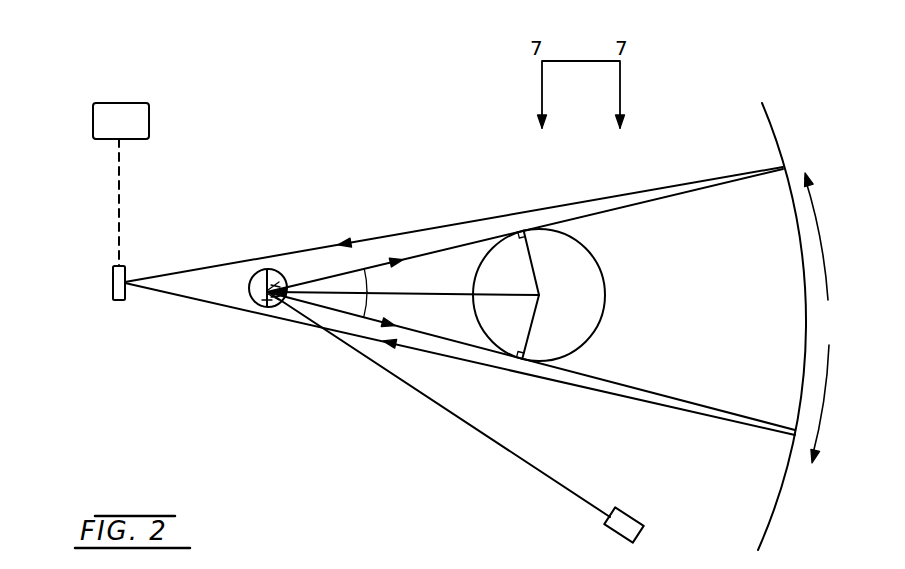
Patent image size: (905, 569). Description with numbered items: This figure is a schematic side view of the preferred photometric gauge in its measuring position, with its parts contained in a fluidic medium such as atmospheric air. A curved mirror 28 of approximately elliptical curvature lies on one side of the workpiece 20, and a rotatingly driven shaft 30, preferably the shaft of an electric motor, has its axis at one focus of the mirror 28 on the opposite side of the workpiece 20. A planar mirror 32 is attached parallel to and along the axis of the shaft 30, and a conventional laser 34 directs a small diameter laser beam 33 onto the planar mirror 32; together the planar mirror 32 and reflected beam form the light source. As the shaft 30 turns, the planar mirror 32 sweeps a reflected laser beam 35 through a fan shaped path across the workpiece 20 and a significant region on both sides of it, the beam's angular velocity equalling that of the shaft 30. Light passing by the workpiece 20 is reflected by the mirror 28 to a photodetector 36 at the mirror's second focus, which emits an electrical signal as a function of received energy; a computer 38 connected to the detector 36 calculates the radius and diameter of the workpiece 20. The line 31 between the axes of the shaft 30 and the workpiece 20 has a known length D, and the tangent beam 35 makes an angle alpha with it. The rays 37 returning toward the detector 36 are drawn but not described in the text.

The workpiece 20 is at (588, 345).
The curved mirror 28 is at (784, 477).
The rotatingly driven shaft 30 is at (262, 269).
The line 31 is at (456, 292).
The planar mirror 32 is at (275, 308).
The laser beam 33 is at (448, 412).
The laser 34 is at (609, 537).
The reflected laser beam 35 is at (393, 258).
The photodetector 36 is at (118, 302).
The reflected rays 37 is at (313, 248).
The computer 38 is at (93, 122).